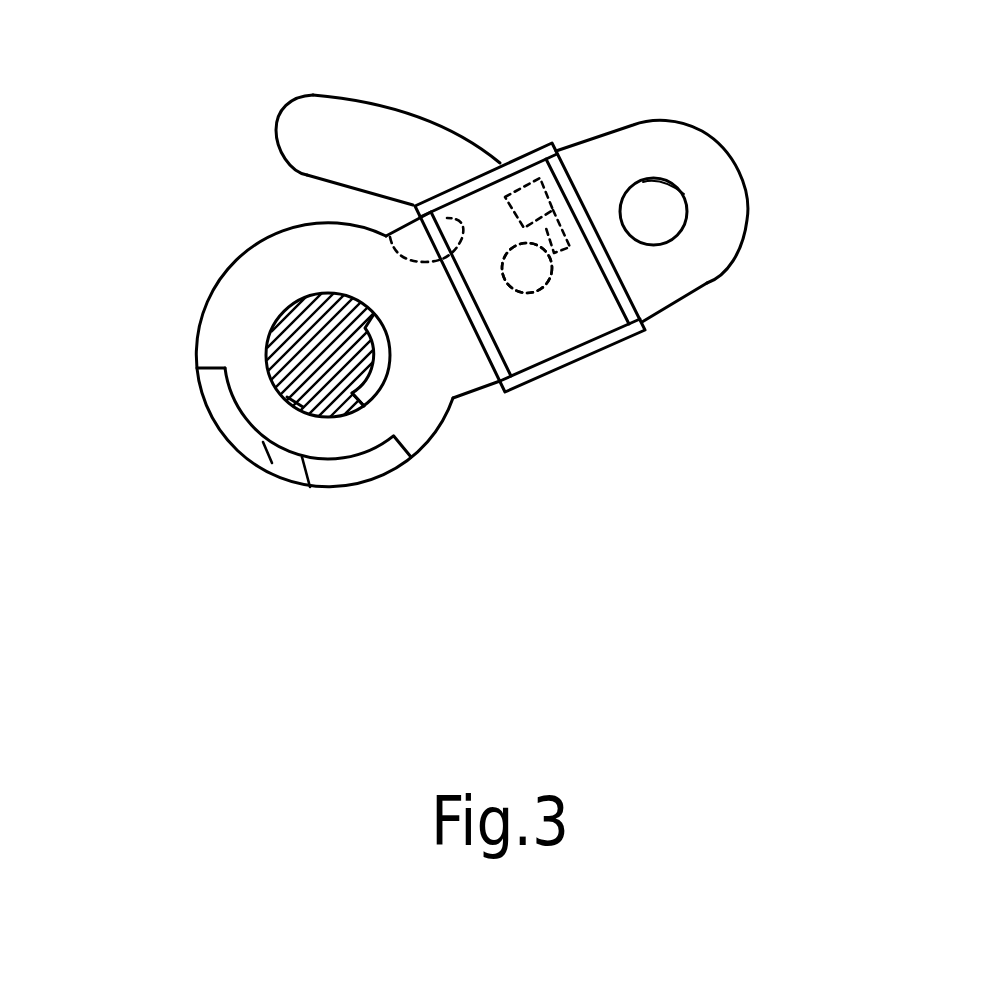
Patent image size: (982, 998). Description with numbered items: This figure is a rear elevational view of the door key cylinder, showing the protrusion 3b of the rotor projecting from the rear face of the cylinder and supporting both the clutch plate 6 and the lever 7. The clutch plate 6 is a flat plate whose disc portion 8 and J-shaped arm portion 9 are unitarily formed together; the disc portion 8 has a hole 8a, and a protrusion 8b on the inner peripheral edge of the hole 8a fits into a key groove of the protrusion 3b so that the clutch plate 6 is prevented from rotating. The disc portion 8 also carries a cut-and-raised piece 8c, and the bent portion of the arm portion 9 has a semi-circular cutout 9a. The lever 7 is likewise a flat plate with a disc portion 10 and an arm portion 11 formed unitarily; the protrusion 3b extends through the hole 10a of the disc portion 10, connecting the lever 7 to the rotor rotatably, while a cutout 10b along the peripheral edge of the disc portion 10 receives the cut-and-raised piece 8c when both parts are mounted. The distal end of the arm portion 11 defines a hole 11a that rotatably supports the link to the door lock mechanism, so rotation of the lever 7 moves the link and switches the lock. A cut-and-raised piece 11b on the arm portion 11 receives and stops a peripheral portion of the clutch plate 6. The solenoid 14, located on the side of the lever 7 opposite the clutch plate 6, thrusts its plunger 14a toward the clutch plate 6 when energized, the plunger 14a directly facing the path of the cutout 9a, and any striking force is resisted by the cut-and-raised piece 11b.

The protrusion 3b is at (268, 330).
The clutch plate 6 is at (417, 113).
The lever 7 is at (697, 292).
The disc portion 8 is at (380, 460).
The hole 8a is at (284, 398).
The protrusion 8b is at (380, 388).
The cut-and-raised piece 8c is at (305, 467).
The arm portion 9 is at (313, 93).
The semi-circular cutout 9a is at (530, 256).
The disc portion 10 is at (260, 267).
The hole 10a is at (284, 398).
The cutout 10b is at (243, 417).
The arm portion 11 is at (703, 132).
The hole 11a is at (683, 193).
The cut-and-raised piece 11b is at (582, 181).
The solenoid 14 is at (543, 141).
The plunger 14a is at (527, 293).